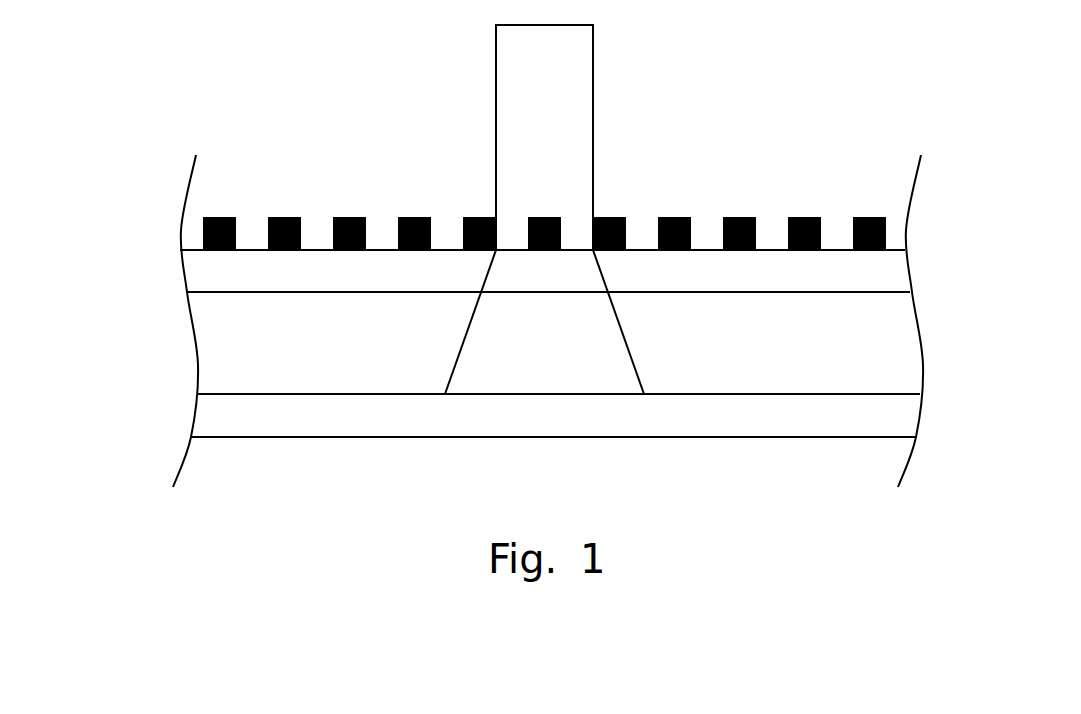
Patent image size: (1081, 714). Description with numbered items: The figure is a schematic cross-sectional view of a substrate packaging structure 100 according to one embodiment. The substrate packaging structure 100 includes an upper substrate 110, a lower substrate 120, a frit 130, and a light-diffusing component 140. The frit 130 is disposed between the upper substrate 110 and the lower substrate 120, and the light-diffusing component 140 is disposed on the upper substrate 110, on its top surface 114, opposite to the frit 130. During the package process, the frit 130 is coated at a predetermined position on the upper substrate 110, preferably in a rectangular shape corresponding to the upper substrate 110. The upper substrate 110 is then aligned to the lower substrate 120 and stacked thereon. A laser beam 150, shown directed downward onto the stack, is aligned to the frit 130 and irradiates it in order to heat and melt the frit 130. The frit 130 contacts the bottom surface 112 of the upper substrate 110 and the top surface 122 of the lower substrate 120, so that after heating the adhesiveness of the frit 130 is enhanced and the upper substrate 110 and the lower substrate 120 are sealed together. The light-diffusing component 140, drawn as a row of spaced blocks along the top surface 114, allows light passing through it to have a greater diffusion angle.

The substrate packaging structure 100 is at (171, 91).
The upper substrate 110 is at (890, 268).
The bottom surface 112 is at (213, 292).
The top surface 114 is at (838, 250).
The lower substrate 120 is at (901, 413).
The top surface 122 is at (218, 394).
The frit 130 is at (898, 345).
The light-diffusing component 140 is at (887, 237).
The laser beam 150 is at (575, 96).